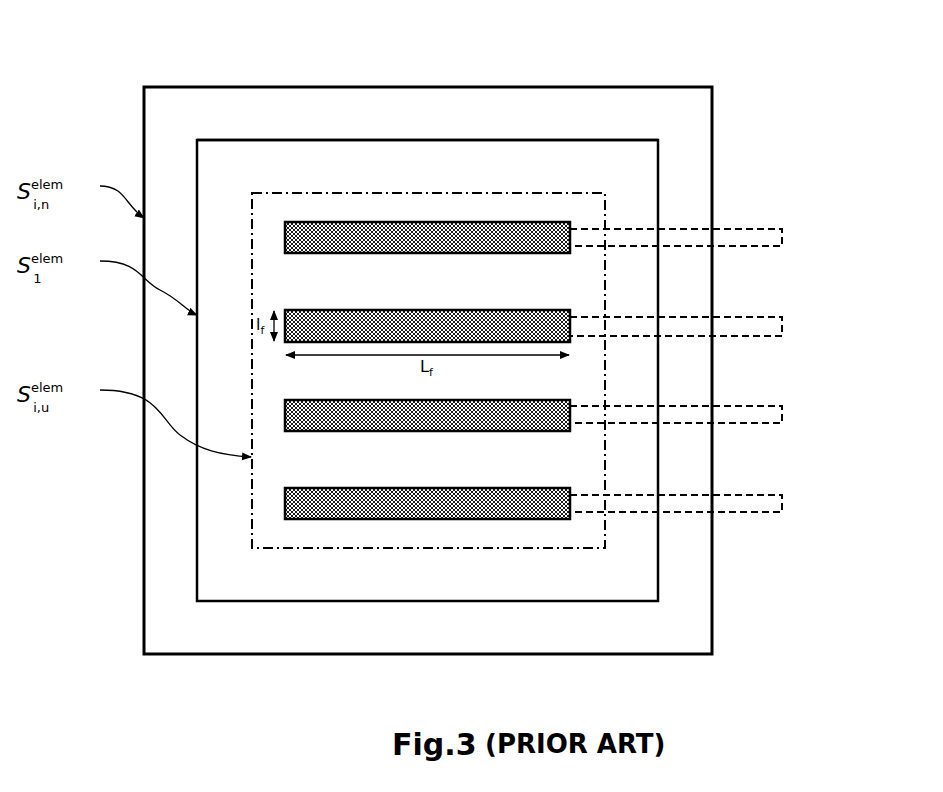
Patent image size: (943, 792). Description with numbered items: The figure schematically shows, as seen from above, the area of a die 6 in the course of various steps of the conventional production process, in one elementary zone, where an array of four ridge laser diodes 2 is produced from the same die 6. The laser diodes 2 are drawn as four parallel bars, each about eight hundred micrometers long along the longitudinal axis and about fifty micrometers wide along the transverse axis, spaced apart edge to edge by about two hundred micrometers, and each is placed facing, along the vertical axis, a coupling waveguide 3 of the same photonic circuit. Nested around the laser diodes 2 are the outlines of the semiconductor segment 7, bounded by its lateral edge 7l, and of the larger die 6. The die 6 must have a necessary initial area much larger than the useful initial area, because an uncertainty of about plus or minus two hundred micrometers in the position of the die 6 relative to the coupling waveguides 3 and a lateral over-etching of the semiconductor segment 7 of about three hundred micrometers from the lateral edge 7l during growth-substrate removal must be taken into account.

The die 6 is at (270, 86).
The semiconductor segment 7 is at (341, 139).
The lateral edge 7l is at (582, 140).
The ridge laser diodes 2 is at (472, 309).
The coupling waveguides 3 is at (784, 238).